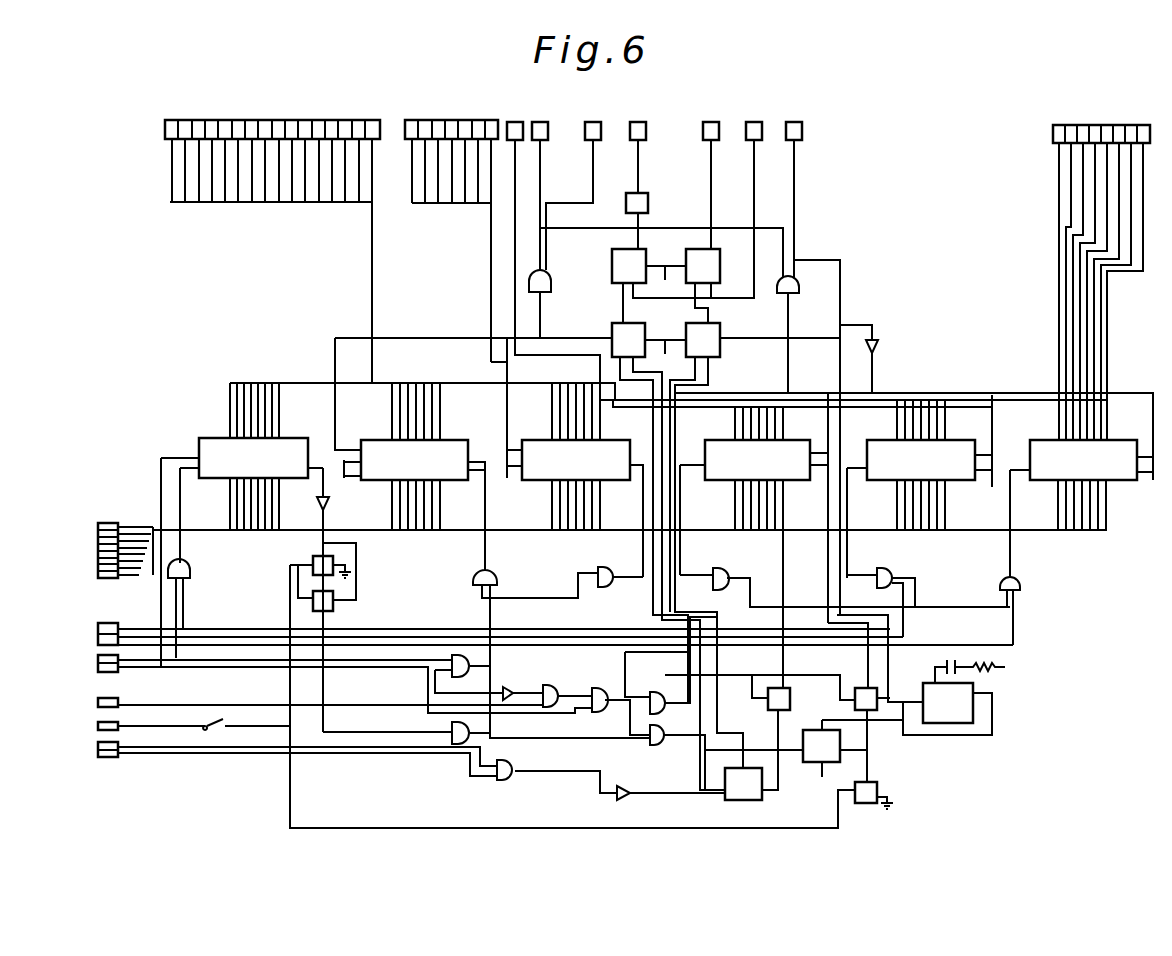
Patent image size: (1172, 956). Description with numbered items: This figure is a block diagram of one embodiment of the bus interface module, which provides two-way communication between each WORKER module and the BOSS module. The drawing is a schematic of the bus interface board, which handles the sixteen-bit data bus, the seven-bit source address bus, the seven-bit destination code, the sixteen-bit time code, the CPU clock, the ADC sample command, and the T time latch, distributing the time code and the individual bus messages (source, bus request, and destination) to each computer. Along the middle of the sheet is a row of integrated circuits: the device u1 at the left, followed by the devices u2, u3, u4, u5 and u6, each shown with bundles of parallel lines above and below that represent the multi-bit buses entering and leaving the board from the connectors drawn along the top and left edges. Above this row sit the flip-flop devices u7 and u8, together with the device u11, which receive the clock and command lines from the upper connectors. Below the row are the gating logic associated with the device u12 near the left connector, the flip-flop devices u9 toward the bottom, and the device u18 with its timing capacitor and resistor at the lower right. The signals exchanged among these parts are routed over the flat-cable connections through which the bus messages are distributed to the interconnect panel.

The 1852 integrated circuit u1 is at (253, 458).
The 4508 latch u2 is at (414, 460).
The 4508 latch u3 is at (576, 460).
The 4508 latch u4 is at (757, 460).
The 4508 latch u5 is at (921, 460).
The 4508 latch u6 is at (1083, 460).
The 4013 flip-flop u7 is at (603, 303).
The 4013 flip-flop u8 is at (722, 296).
The 4013 flip-flop u9 is at (769, 775).
The inverter/buffer u11 is at (486, 387).
The gate u12 is at (198, 567).
The 4098 monostable multivibrator u18 is at (954, 697).